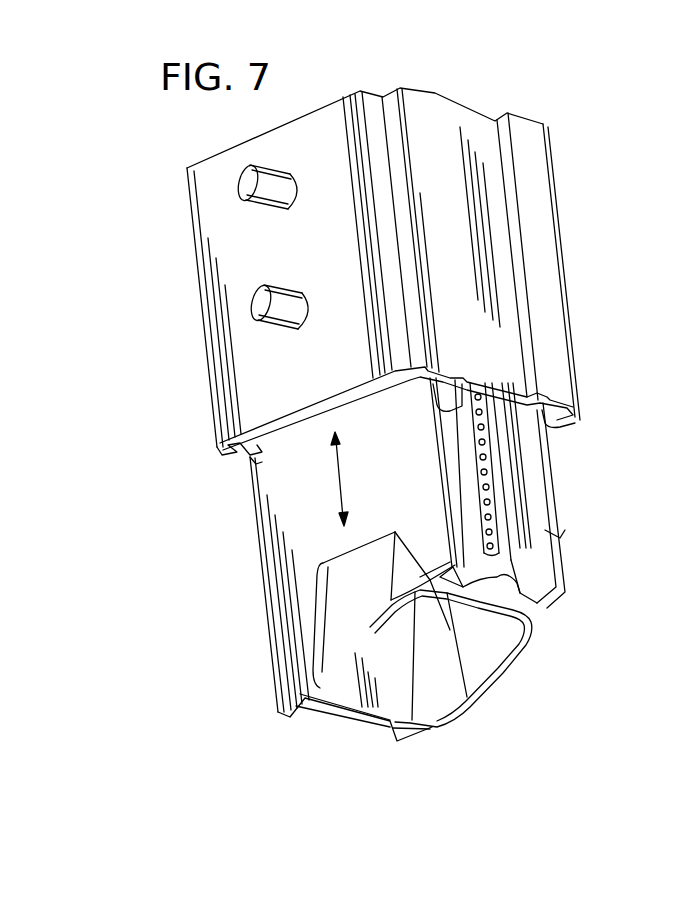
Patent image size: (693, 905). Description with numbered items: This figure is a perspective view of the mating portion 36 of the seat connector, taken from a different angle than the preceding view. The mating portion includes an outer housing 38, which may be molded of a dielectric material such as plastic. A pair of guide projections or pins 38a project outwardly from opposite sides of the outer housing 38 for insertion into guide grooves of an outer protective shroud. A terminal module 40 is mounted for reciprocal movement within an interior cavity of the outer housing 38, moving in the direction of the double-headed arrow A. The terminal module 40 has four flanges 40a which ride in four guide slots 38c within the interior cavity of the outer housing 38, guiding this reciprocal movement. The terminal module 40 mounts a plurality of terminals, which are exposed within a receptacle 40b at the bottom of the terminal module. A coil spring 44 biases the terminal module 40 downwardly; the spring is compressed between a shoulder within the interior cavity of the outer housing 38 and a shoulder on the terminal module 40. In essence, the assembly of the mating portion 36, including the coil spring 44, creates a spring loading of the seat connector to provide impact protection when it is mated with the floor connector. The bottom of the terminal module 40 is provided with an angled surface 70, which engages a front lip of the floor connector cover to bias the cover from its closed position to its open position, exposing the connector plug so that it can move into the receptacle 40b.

The mating portion 36 is at (578, 283).
The outer housing 38 is at (243, 352).
The guide projections or pins 38a is at (248, 186).
The guide slots 38c is at (296, 458).
The terminal module 40 is at (305, 567).
The flanges 40a is at (258, 462).
The receptacle 40b is at (482, 625).
The coil spring 44 is at (480, 463).
The angled surface 70 is at (483, 690).
The direction of reciprocal movement A is at (336, 478).